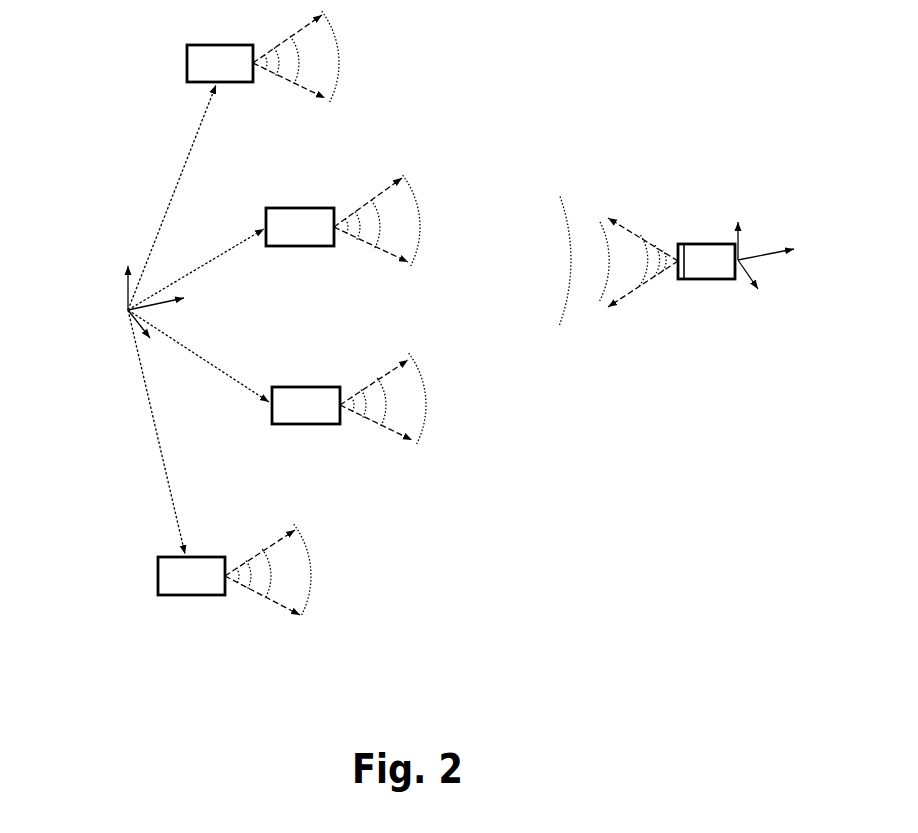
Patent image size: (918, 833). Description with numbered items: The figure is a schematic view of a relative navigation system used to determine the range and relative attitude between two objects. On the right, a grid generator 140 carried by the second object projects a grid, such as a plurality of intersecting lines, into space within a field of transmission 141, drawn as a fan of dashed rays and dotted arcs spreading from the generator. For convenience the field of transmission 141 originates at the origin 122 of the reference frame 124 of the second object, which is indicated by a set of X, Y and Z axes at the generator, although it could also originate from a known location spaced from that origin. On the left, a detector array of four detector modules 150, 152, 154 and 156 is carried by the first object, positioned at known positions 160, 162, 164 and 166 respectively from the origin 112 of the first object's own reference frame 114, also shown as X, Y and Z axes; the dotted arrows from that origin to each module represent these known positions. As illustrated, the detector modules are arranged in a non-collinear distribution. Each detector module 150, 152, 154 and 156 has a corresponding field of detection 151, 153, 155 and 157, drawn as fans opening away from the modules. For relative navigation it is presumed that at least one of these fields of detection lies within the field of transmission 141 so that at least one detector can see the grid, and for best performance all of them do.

The origin of the first object 112 is at (122, 309).
The reference frame of the first object 114 is at (76, 188).
The origin 122 is at (744, 254).
The reference frame 124 is at (839, 306).
The grid generator 140 is at (707, 284).
The field of transmission 141 is at (626, 271).
The detector module 150 is at (217, 44).
The field of detection 151 is at (330, 63).
The detector module 152 is at (304, 207).
The field of detection 153 is at (418, 232).
The detector module 154 is at (297, 386).
The field of detection 155 is at (424, 416).
The detector module 156 is at (168, 556).
The field of detection 157 is at (312, 590).
The known position 160 is at (183, 168).
The known position 162 is at (210, 258).
The known position 164 is at (196, 353).
The known position 166 is at (151, 412).